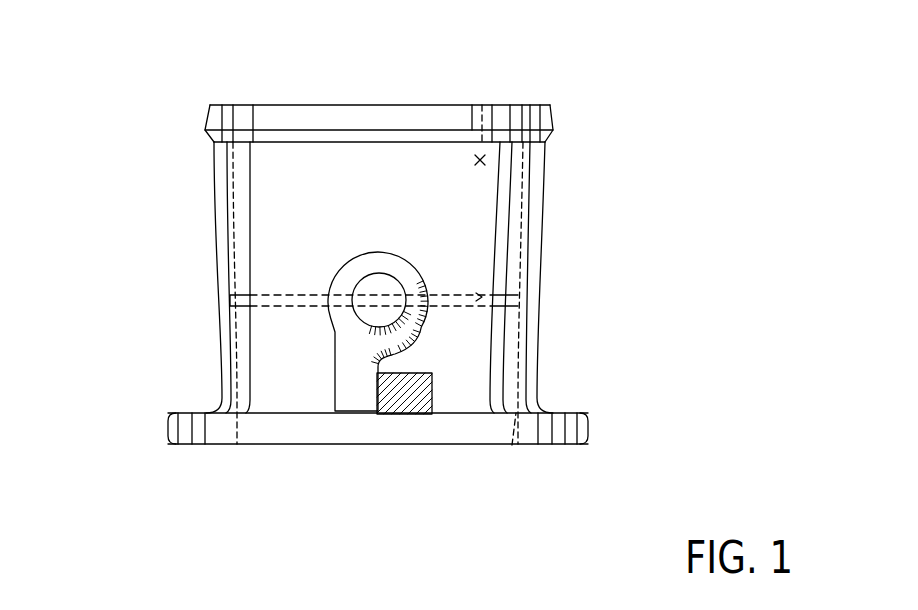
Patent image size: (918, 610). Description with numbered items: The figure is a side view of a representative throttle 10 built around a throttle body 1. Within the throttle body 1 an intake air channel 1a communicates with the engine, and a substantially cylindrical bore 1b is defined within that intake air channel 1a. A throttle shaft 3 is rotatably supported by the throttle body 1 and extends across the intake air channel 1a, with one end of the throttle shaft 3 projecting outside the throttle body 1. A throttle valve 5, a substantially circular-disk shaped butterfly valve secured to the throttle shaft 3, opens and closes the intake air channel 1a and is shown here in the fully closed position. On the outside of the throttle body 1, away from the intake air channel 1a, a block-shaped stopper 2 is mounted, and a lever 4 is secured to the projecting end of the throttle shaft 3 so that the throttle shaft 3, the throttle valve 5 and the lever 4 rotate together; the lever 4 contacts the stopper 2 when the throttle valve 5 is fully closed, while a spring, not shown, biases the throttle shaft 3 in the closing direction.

The throttle 10 is at (182, 222).
The throttle body 1 is at (530, 165).
The intake air channel 1a is at (482, 105).
The cylindrical bore 1b is at (512, 445).
The stopper 2 is at (402, 414).
The throttle shaft 3 is at (380, 272).
The lever 4 is at (350, 385).
The throttle valve 5 is at (503, 285).